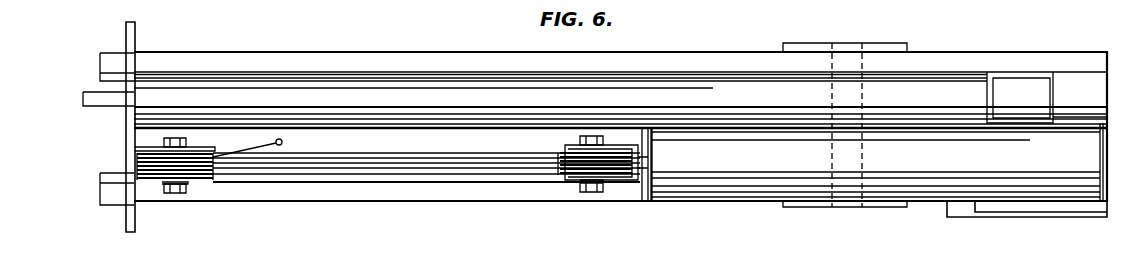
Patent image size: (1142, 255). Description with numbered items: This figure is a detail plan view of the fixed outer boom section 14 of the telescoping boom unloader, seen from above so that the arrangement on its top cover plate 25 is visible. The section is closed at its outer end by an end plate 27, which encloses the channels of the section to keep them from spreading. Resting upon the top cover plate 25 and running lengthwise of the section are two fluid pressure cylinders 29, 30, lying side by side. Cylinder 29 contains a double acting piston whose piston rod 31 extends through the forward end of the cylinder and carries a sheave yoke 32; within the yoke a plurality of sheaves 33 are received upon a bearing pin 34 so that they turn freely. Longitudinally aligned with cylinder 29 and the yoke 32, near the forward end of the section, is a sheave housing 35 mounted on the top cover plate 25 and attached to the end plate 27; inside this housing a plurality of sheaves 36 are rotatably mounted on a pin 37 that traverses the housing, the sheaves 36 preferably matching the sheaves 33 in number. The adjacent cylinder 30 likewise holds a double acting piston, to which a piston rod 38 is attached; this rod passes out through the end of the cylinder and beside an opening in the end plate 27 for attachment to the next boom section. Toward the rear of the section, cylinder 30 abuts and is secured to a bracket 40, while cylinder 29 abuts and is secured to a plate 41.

The fixed boom section 14 is at (313, 49).
The top cover plate 25 is at (425, 174).
The end plate 27 is at (128, 216).
The fluid pressure cylinder 29 is at (1071, 160).
The fluid pressure cylinder 30 is at (774, 102).
The piston rod 31 is at (644, 183).
The sheave yoke 32 is at (565, 146).
The sheaves 33 is at (566, 178).
The bearing pin 34 is at (592, 193).
The sheave housing 35 is at (198, 182).
The sheaves 36 is at (207, 176).
The pin 37 is at (174, 194).
The piston rod 38 is at (83, 98).
The bracket 40 is at (1037, 102).
The plate 41 is at (1107, 166).